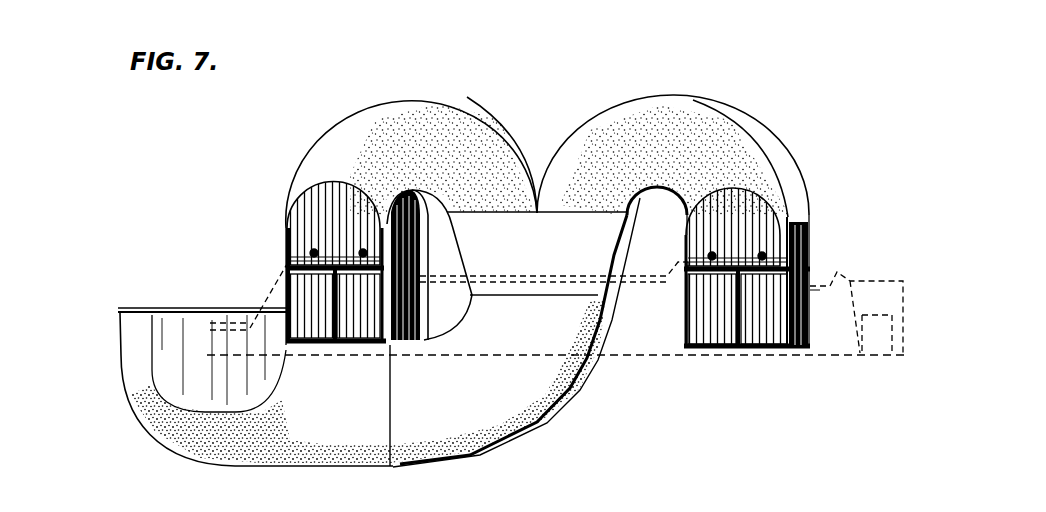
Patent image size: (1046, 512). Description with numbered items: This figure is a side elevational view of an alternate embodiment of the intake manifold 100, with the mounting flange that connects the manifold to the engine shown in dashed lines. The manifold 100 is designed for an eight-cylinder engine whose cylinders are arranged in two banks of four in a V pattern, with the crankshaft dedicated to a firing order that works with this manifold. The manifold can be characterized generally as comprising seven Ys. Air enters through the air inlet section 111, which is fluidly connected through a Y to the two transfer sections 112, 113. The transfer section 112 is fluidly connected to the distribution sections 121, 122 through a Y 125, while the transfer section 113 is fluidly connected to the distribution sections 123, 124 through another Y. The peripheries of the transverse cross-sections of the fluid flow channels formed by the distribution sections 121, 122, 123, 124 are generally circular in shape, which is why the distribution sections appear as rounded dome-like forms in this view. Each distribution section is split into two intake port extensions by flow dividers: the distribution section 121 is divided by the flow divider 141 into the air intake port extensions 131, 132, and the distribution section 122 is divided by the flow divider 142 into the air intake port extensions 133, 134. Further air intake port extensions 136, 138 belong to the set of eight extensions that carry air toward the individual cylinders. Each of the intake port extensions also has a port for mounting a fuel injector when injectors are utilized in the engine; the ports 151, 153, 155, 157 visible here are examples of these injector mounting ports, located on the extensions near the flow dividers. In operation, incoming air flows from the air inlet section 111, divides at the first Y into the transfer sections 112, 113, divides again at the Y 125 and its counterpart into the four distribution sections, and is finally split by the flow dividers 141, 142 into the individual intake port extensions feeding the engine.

The manifold 100 is at (178, 466).
The air inlet section 111 is at (180, 388).
The transfer section 112 is at (408, 443).
The transfer section 113 is at (558, 403).
The distribution section 121 is at (375, 122).
The distribution section 122 is at (650, 100).
The distribution section 123 is at (463, 100).
The distribution section 124 is at (736, 114).
The Y 125 is at (533, 212).
The air intake port extension 131 is at (305, 295).
The air intake port extension 132 is at (365, 344).
The air intake port extension 133 is at (710, 349).
The air intake port extension 134 is at (772, 348).
The air intake port extension 136 is at (425, 325).
The air intake port extension 138 is at (802, 327).
The flow divider 141 is at (338, 344).
The flow divider 142 is at (740, 348).
The port 151 is at (315, 251).
The port 153 is at (370, 252).
The port 155 is at (680, 283).
The port 157 is at (760, 255).